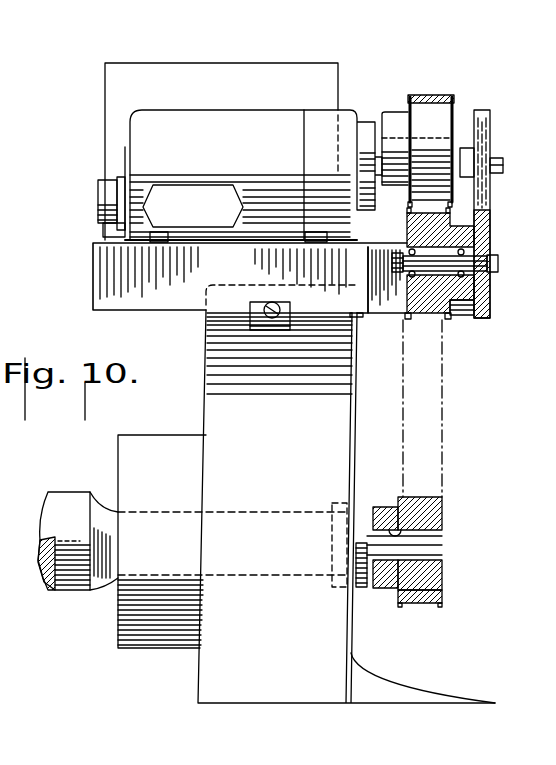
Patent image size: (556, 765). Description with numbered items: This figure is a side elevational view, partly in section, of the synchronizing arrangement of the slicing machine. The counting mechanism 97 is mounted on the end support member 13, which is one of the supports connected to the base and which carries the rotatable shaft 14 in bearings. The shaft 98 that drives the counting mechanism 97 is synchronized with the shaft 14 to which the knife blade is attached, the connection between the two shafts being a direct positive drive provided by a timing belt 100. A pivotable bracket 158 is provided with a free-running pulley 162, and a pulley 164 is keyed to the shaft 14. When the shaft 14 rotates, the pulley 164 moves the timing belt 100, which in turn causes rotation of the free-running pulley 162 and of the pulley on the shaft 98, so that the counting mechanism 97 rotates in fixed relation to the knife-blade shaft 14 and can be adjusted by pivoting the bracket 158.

The end support member 13 is at (206, 392).
The rotatable shaft 14 is at (63, 505).
The counting mechanism 97 is at (157, 152).
The shaft 98 is at (438, 122).
The timing belt 100 is at (442, 472).
The bracket 158 is at (490, 222).
The free-running pulley 162 is at (488, 295).
The pulley 164 is at (442, 582).